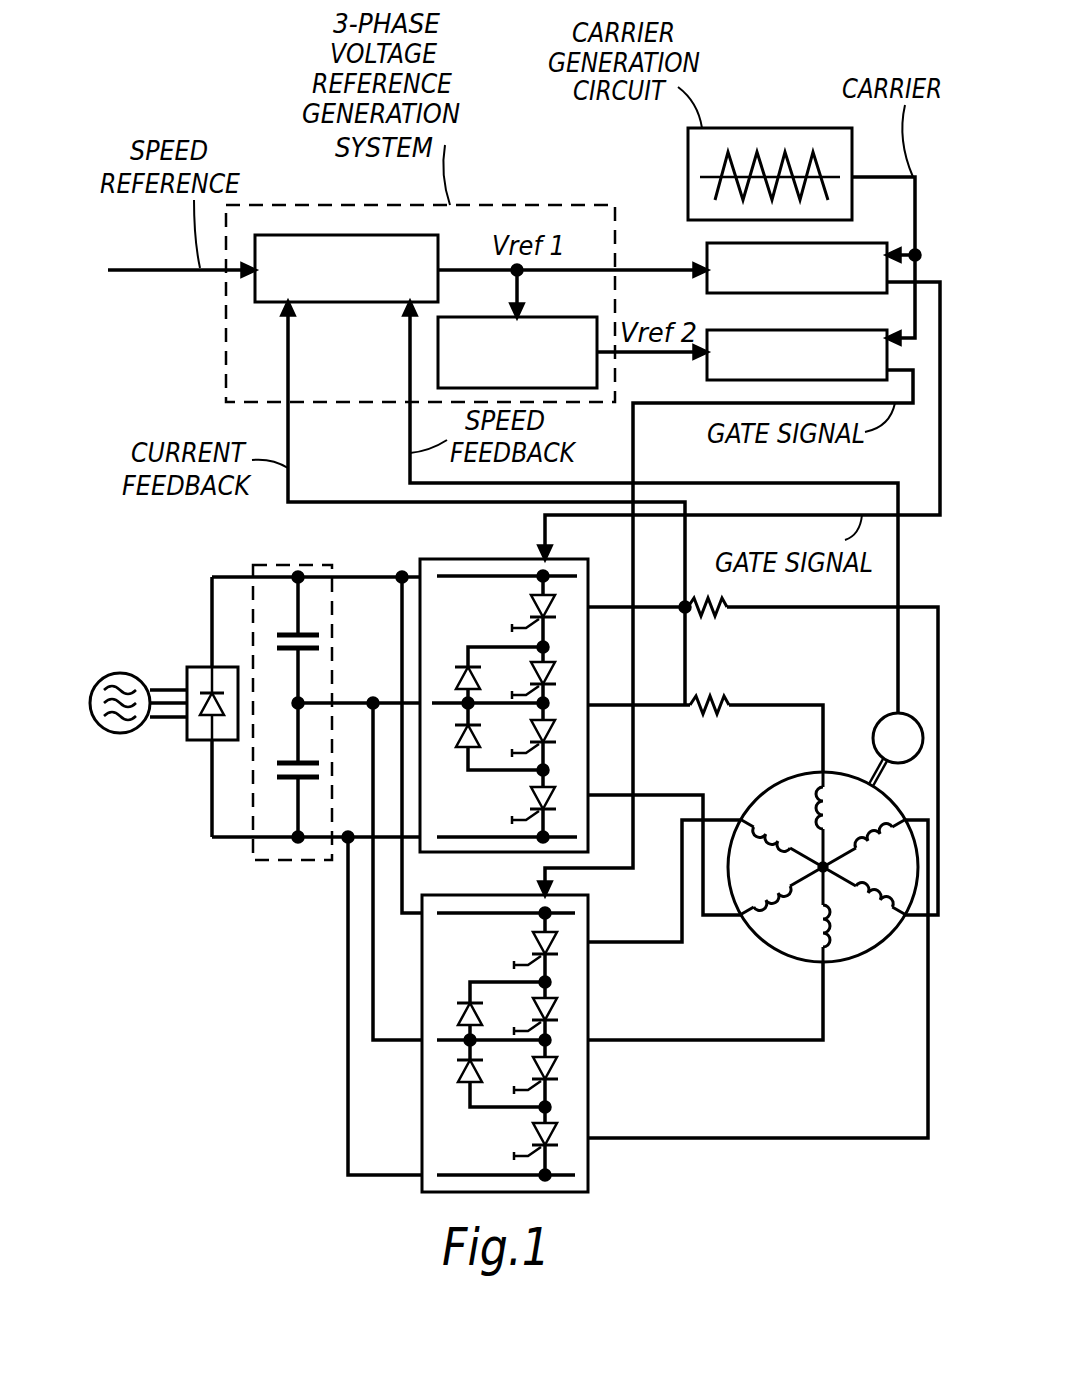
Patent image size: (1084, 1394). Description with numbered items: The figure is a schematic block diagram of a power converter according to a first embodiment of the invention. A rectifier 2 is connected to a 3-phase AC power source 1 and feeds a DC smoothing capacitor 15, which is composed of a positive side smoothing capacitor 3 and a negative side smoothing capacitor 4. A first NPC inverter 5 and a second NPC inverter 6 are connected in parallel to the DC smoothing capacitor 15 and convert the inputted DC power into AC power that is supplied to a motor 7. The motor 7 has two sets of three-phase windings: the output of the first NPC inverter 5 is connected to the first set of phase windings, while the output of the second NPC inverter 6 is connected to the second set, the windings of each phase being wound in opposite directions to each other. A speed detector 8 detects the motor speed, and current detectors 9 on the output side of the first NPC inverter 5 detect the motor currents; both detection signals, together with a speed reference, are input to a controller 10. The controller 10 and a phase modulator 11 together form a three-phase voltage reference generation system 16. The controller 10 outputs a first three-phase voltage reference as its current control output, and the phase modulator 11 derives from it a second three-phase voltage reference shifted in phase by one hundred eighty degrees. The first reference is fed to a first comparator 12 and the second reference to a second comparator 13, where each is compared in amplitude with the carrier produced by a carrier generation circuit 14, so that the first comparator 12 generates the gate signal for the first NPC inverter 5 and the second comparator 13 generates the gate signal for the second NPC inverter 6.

The 3-phase AC power source 1 is at (125, 733).
The rectifier 2 is at (200, 740).
The positive side smoothing capacitor 3 is at (290, 650).
The negative side smoothing capacitor 4 is at (290, 780).
The first NPC inverter 5 is at (455, 559).
The second NPC inverter 6 is at (590, 900).
The motor 7 is at (768, 953).
The speed detector 8 is at (907, 763).
The current detectors 9 is at (720, 610).
The controller 10 is at (263, 304).
The phase modulator 11 is at (560, 317).
The first comparator 12 is at (707, 250).
The second comparator 13 is at (707, 370).
The carrier generation circuit 14 is at (688, 135).
The DC smoothing capacitor 15 is at (279, 690).
The 3-phase voltage reference generation system 16 is at (226, 400).